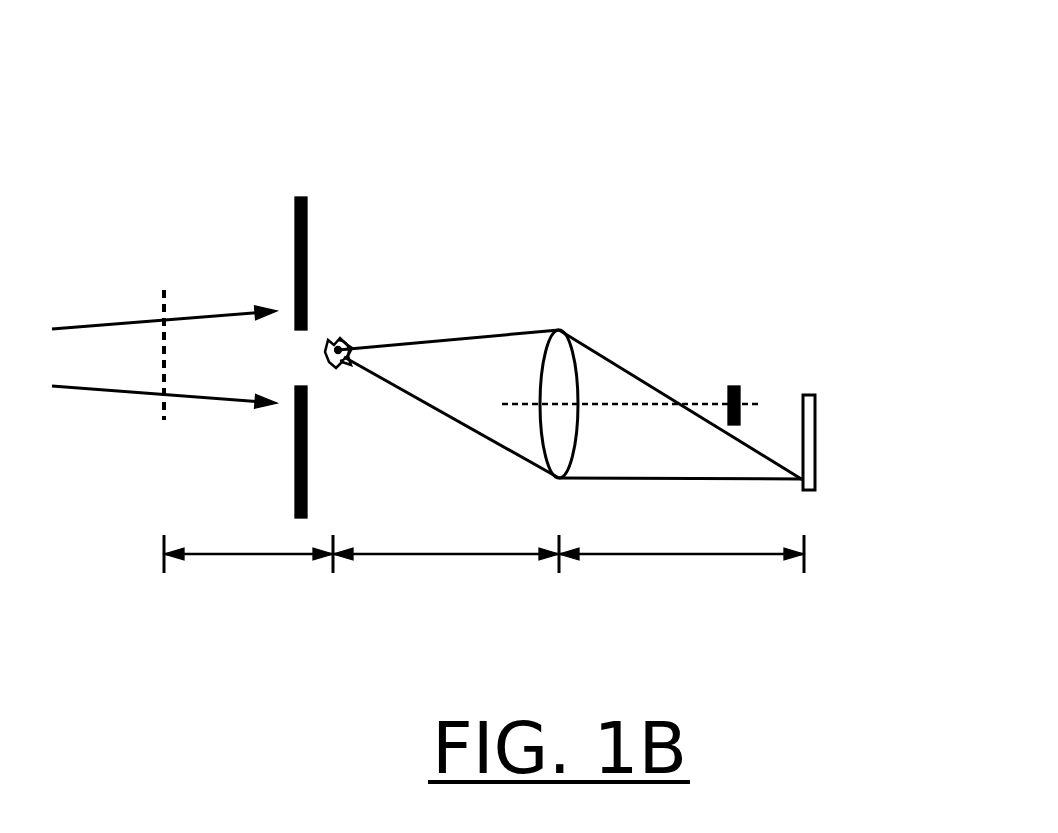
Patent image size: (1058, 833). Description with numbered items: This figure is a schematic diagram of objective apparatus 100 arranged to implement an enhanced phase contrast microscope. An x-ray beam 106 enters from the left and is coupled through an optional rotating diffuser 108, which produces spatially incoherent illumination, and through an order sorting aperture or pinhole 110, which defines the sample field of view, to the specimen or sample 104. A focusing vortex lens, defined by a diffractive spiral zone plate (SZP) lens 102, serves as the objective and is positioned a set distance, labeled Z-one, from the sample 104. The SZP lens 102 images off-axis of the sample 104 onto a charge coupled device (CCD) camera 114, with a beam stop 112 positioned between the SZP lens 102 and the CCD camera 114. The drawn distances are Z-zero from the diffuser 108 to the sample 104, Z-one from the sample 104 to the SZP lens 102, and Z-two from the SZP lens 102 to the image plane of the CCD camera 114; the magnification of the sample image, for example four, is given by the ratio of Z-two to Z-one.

The objective apparatus 100 is at (591, 53).
The spiral zone plate lens 102 is at (559, 367).
The sample 104 is at (341, 362).
The x-ray beam 106 is at (160, 309).
The rotating diffuser 108 is at (165, 408).
The pinhole 110 is at (300, 295).
The beam stop 112 is at (732, 369).
The CCD camera 114 is at (880, 441).